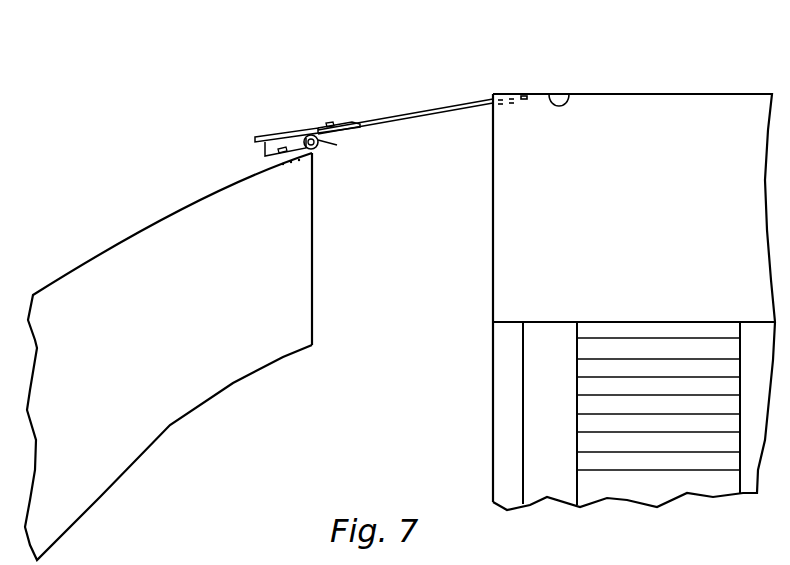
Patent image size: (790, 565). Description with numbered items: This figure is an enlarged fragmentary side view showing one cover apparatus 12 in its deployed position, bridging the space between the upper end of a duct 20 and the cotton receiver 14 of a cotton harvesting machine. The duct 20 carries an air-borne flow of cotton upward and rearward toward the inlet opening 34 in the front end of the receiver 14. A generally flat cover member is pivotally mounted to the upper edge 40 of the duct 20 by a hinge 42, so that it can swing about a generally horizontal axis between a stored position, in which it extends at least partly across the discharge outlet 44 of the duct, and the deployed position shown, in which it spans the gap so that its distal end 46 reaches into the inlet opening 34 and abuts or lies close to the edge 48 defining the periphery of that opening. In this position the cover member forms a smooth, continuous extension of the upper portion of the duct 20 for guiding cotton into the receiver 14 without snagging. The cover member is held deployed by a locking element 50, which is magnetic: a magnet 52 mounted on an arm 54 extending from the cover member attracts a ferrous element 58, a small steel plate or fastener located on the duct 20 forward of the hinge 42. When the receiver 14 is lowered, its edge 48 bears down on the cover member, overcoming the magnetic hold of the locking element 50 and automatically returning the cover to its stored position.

The cover apparatus 12 is at (468, 105).
The cotton receiver 14 is at (697, 92).
The duct 20 is at (103, 245).
The inlet opening 34 is at (493, 253).
The upper edge 40 is at (310, 156).
The hinge 42 is at (322, 125).
The discharge outlet 44 is at (313, 310).
The distal end 46 is at (513, 107).
The edge 48 is at (565, 106).
The locking element 50 is at (262, 148).
The magnet 52 is at (339, 133).
The arm 54 is at (298, 133).
The ferrous element 58 is at (262, 162).